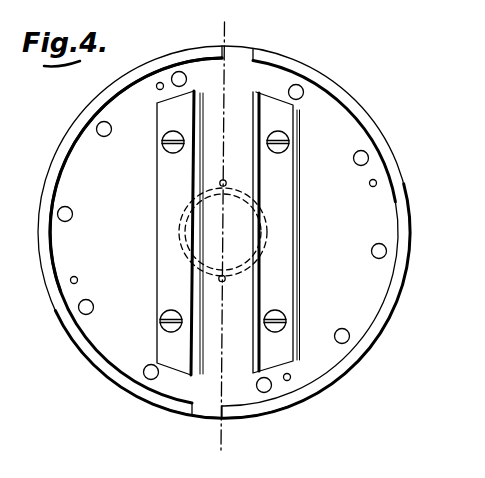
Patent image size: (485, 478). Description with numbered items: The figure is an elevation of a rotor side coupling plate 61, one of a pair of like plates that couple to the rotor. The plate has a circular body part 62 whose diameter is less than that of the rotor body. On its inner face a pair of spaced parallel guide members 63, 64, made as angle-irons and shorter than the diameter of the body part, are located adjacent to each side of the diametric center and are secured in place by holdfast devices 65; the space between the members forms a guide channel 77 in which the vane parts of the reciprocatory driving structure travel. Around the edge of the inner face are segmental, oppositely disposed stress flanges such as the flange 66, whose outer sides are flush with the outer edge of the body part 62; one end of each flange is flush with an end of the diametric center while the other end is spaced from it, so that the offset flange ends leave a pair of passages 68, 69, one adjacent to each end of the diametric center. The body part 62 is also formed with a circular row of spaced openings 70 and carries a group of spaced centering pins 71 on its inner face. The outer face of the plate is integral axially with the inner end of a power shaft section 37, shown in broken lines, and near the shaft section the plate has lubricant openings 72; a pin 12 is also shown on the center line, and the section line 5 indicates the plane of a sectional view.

The section line 5- 5 is at (223, 234).
The locating pin 12 is at (226, 279).
The power shaft section 37 is at (243, 230).
The side coupling plate 61 is at (350, 104).
The circular body part 62 is at (368, 286).
The guide member 63 is at (193, 168).
The guide member 64 is at (260, 192).
The holdfast device 65 is at (163, 319).
The stress flange 66 is at (65, 156).
The passage 68 is at (243, 48).
The passage 69 is at (205, 410).
The opening 70 is at (153, 366).
The centering pin 71 is at (76, 277).
The lubricant opening 72 is at (220, 183).
The guide channel 77 is at (218, 95).